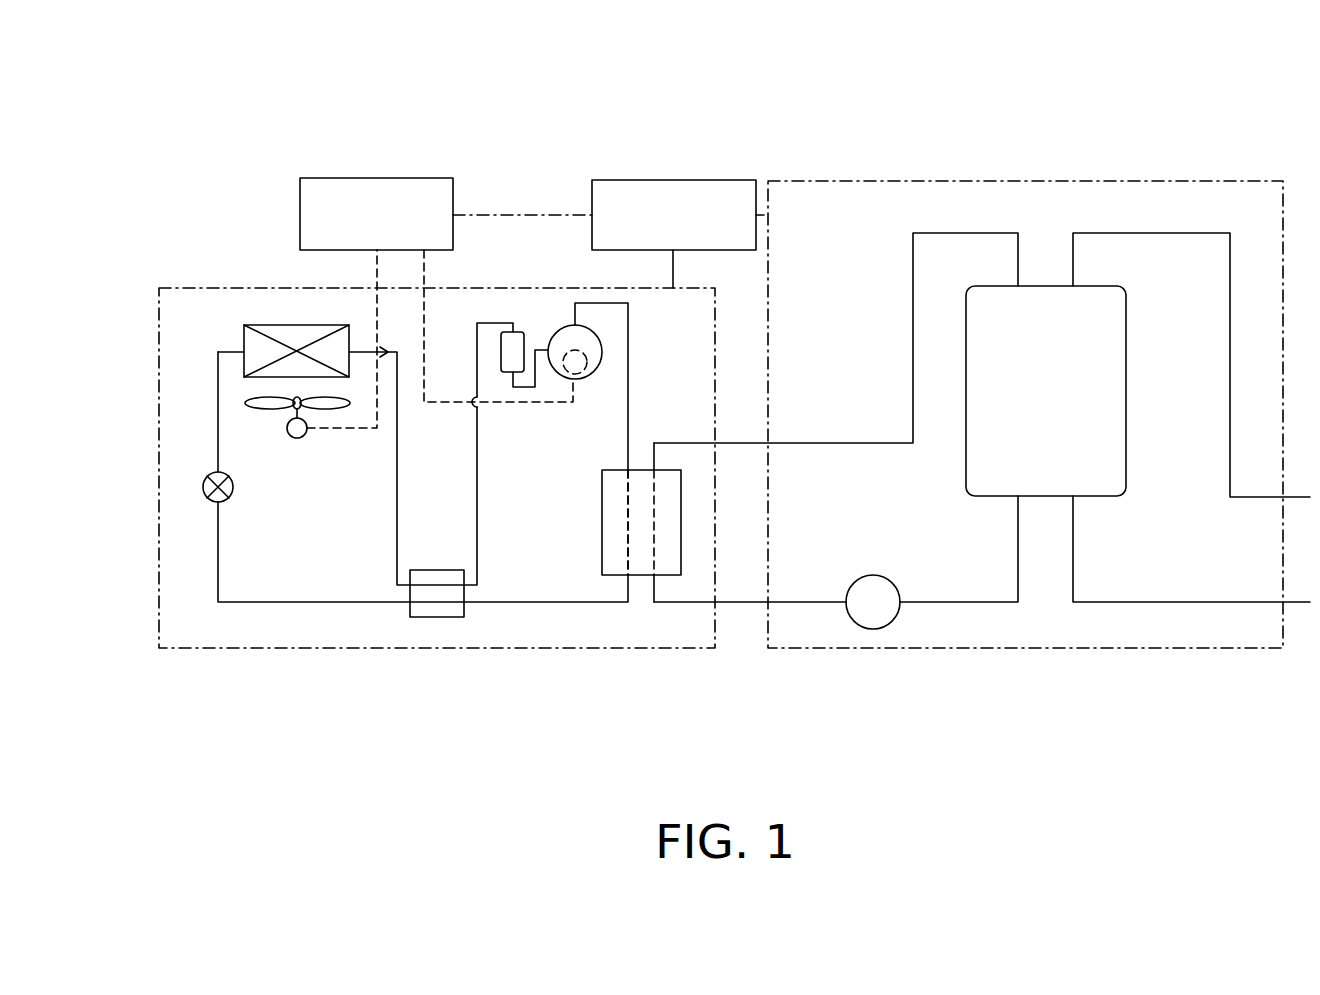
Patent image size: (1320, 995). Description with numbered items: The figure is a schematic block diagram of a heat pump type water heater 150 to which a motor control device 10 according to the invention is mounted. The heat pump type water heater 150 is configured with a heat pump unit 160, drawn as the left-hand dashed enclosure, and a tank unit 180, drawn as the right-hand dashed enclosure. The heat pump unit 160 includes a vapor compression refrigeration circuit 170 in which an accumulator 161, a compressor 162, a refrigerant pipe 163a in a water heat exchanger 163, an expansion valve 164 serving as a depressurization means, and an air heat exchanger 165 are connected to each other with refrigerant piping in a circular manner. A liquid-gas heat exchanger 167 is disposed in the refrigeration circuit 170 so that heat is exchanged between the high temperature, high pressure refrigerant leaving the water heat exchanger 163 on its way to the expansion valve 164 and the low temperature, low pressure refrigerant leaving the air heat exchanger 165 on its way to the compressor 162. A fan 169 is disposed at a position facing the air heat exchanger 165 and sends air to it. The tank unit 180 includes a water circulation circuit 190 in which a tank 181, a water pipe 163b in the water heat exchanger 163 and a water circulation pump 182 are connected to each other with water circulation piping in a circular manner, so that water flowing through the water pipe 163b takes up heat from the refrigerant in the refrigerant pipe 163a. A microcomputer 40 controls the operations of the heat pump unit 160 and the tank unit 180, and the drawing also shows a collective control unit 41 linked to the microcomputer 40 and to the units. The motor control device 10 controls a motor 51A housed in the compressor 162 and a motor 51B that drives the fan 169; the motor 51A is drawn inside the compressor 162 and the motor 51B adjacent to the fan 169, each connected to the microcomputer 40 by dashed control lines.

The motor control device 10 is at (288, 166).
The microcomputer 40 is at (395, 180).
The collective control unit 41 is at (663, 180).
The heat pump type water heater 150 is at (770, 160).
The heat pump unit 160 is at (195, 287).
The accumulator 161 is at (516, 340).
The compressor 162 is at (567, 338).
The water heat exchanger 163 is at (645, 575).
The refrigerant pipe 163a is at (622, 553).
The water pipe 163b is at (656, 500).
The expansion valve 164 is at (205, 487).
The air heat exchanger 165 is at (250, 333).
The liquid-gas heat exchanger 167 is at (430, 608).
The fan 169 is at (253, 403).
The vapor compression refrigeration circuit 170 is at (211, 537).
The tank unit 180 is at (875, 182).
The tank 181 is at (1035, 293).
The water circulation pump 182 is at (873, 620).
The water circulation circuit 190 is at (965, 224).
The motor 51A is at (585, 375).
The motor 51B is at (287, 426).